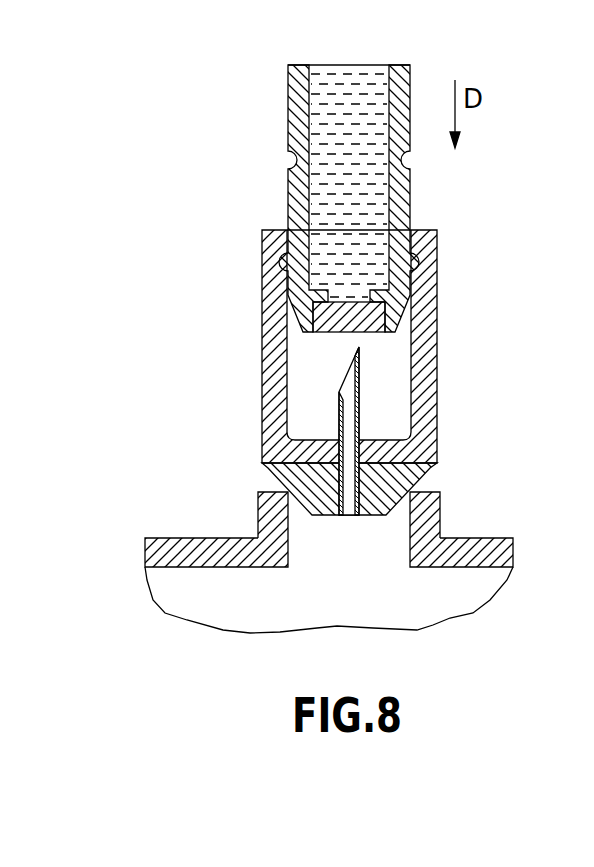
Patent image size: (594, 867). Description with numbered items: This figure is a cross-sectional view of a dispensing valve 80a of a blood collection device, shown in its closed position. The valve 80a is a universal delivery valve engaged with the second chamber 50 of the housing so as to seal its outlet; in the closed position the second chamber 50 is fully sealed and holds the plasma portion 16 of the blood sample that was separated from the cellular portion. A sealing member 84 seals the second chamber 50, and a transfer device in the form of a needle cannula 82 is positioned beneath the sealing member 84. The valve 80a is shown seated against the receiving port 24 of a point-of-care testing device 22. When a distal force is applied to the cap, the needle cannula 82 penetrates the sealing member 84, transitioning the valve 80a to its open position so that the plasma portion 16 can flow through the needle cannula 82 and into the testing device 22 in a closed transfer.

The dispensing valve 80a is at (150, 123).
The second chamber 50 is at (298, 192).
The plasma portion 16 is at (375, 205).
The sealing member 84 is at (363, 322).
The needle cannula 82 is at (352, 395).
The receiving port 24 is at (310, 535).
The point-of-care testing device 22 is at (178, 548).